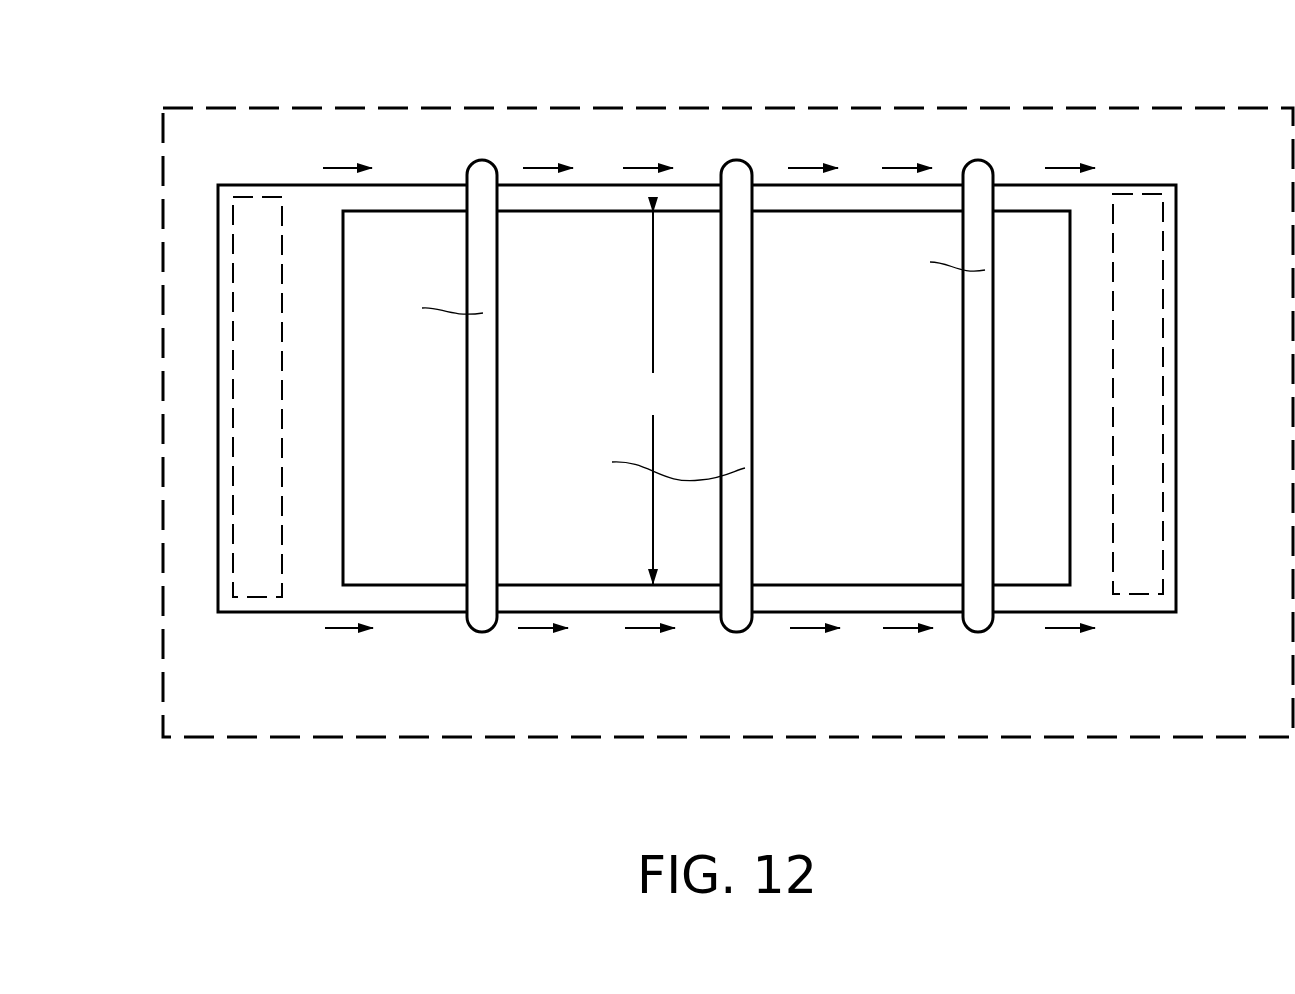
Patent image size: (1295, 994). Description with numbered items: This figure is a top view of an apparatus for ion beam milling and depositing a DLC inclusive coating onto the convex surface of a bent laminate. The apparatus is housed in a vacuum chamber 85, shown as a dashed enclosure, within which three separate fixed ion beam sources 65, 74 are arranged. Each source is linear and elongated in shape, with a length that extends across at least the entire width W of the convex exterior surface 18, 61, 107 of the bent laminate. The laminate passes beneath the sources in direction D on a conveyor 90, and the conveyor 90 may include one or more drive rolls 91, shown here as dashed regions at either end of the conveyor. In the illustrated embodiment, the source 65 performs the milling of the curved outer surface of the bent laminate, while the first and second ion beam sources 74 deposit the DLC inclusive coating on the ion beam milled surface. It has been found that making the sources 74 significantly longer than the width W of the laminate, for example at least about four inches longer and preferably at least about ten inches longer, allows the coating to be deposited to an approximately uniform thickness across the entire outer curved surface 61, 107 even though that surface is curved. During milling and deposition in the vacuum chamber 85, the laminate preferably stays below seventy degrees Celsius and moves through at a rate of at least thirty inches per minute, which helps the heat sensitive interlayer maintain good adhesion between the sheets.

The convex exterior surface 18 is at (706, 511).
The outer curved surface 61 is at (706, 511).
The outer curved surface 107 is at (582, 570).
The ion beam source 65 is at (480, 176).
The ion beam source 74 is at (735, 170).
The vacuum chamber 85 is at (1113, 738).
The conveyor 90 is at (860, 612).
The drive roll 91 is at (257, 575).
The direction D is at (530, 168).
The width W is at (653, 398).